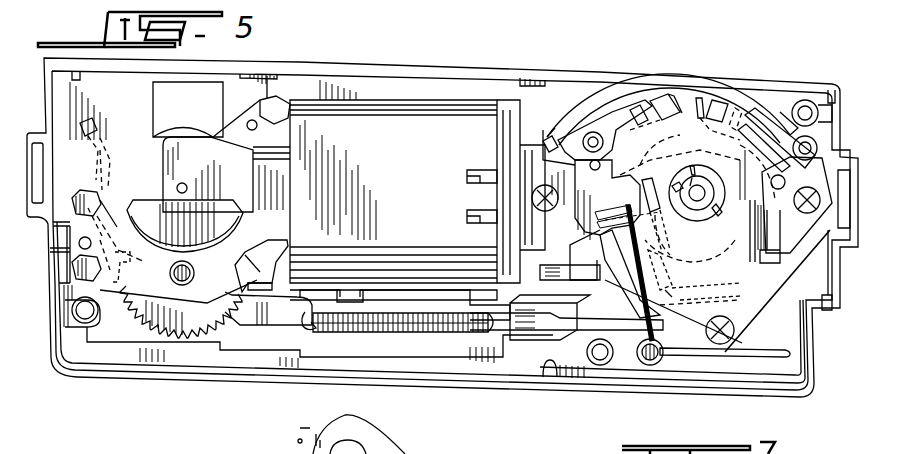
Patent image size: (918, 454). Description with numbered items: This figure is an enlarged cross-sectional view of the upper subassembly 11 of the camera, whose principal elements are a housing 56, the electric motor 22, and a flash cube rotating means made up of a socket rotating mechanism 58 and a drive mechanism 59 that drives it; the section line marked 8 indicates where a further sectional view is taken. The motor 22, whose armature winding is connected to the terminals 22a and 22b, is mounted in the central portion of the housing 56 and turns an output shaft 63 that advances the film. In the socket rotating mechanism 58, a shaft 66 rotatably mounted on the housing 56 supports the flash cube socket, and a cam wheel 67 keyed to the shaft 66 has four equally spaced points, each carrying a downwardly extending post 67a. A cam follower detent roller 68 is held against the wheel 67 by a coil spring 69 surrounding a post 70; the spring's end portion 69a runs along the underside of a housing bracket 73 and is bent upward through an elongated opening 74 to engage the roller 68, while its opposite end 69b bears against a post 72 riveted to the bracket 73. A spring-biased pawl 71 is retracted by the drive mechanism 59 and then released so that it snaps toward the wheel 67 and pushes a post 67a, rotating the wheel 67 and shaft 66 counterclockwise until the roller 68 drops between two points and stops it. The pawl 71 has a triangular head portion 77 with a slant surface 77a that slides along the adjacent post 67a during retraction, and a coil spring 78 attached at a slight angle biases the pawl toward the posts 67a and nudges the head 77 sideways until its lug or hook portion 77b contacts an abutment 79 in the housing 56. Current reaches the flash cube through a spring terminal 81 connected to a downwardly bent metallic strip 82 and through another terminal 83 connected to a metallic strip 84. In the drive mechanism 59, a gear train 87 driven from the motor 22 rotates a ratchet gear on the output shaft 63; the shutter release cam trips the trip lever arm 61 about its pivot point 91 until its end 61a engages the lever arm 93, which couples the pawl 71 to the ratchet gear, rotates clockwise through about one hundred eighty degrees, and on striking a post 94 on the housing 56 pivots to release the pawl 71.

The section line 8- 8 is at (268, 24).
The upper subassembly 11 is at (438, 60).
The electric motor 22 is at (392, 174).
The terminal 22a is at (480, 222).
The terminal 22b is at (470, 175).
The housing 56 is at (607, 72).
The socket rotating mechanism 58 is at (775, 318).
The drive mechanism 59 is at (110, 325).
The trip lever arm 61 is at (96, 118).
The end of trip lever arm 61a is at (120, 220).
The output shaft 63 is at (185, 290).
The shaft 66 is at (697, 202).
The cam wheel 67 is at (688, 108).
The post 67a is at (795, 70).
The cam follower detent roller 68 is at (615, 215).
The coil spring 69 is at (663, 358).
The end portion of coil spring 69a is at (645, 268).
The opposite end of coil spring 69b is at (712, 352).
The post 70 is at (640, 360).
The pawl 71 is at (580, 330).
The post 72 is at (734, 335).
The housing bracket 73 is at (803, 242).
The elongated opening 74 is at (570, 233).
The head portion 77 is at (656, 257).
The slant surface 77a is at (655, 215).
The lug or hook portion 77b is at (675, 290).
The coil spring 78 is at (340, 325).
The abutment 79 is at (712, 312).
The spring terminal 81 is at (740, 108).
The metallic strip 82 is at (762, 312).
The terminal 83 is at (665, 95).
The metallic strip 84 is at (562, 128).
The gear train 87 is at (208, 215).
The pivot point 91 is at (112, 160).
The lever arm 93 is at (265, 280).
The post 94 is at (260, 298).